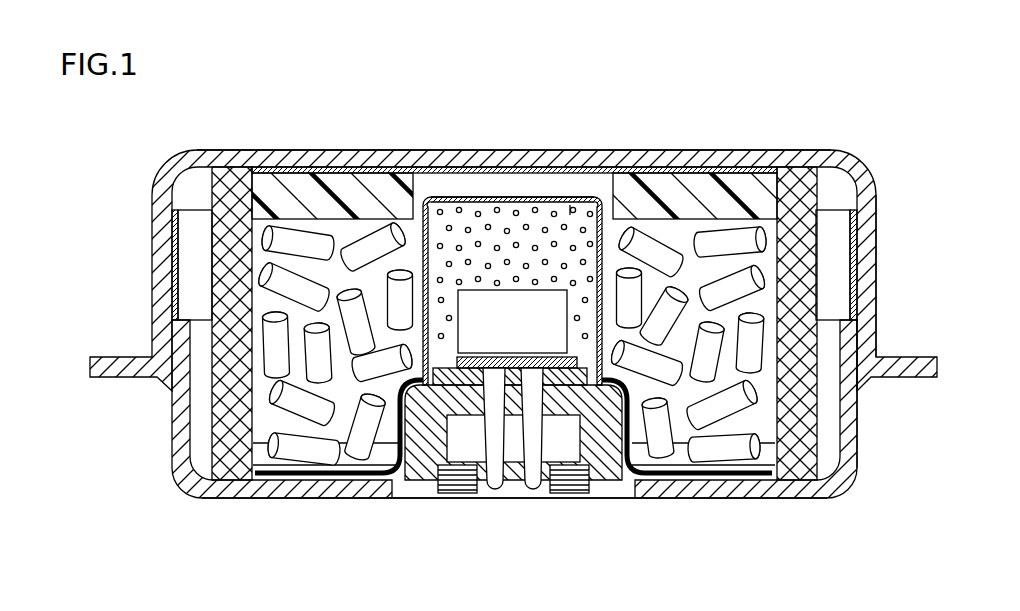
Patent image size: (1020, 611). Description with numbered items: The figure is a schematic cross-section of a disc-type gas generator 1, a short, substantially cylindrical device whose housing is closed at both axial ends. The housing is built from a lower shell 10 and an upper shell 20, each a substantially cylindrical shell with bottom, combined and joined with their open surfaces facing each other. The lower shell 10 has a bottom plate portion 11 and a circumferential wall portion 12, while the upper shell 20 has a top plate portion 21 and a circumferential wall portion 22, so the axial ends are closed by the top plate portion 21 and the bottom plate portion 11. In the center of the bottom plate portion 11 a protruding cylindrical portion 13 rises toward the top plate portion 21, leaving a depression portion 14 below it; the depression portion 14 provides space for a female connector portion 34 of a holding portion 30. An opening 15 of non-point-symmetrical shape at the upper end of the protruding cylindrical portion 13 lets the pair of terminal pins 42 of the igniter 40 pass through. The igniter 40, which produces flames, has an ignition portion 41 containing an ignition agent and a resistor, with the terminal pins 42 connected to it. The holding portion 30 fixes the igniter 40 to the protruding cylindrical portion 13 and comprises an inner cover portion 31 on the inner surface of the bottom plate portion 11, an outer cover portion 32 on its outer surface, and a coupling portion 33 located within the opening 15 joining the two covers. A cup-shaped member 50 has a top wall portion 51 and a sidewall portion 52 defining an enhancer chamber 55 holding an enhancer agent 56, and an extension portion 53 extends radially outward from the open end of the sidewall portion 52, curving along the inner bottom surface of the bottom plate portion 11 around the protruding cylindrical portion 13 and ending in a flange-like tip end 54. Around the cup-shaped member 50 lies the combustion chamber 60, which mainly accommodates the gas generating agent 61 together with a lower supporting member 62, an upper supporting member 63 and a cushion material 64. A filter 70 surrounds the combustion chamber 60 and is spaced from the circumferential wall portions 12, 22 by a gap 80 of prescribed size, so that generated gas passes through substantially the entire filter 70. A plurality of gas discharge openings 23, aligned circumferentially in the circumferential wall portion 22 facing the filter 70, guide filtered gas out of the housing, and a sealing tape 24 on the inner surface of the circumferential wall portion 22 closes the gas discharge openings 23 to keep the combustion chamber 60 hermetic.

The disc-type gas generator 1 is at (797, 140).
The lower shell 10 is at (842, 497).
The bottom plate portion 11 is at (746, 490).
The circumferential wall portion 12 is at (847, 427).
The protruding cylindrical portion 13 is at (422, 470).
The depression portion 14 is at (436, 440).
The opening 15 is at (540, 470).
The upper shell 20 is at (858, 150).
The top plate portion 21 is at (732, 160).
The circumferential wall portion 22 is at (867, 303).
The gas discharge openings 23 is at (867, 270).
The sealing tape 24 is at (853, 240).
The holding portion 30 is at (592, 450).
The inner cover portion 31 is at (580, 366).
The outer cover portion 32 is at (600, 460).
The coupling portion 33 is at (470, 472).
The female connector portion 34 is at (575, 472).
The igniter 40 is at (522, 244).
The ignition portion 41 is at (513, 328).
The terminal pins 42 is at (502, 490).
The cup-shaped member 50 is at (593, 185).
The top wall portion 51 is at (533, 197).
The sidewall portion 52 is at (398, 233).
The extension portion 53 is at (636, 440).
The tip end 54 is at (357, 477).
The enhancer chamber 55 is at (570, 210).
The enhancer agent 56 is at (470, 213).
The combustion chamber 60 is at (685, 233).
The gas generating agent 61 is at (650, 247).
The lower supporting member 62 is at (285, 476).
The upper supporting member 63 is at (287, 167).
The cushion material 64 is at (347, 195).
The filter 70 is at (233, 243).
The gap 80 is at (193, 297).